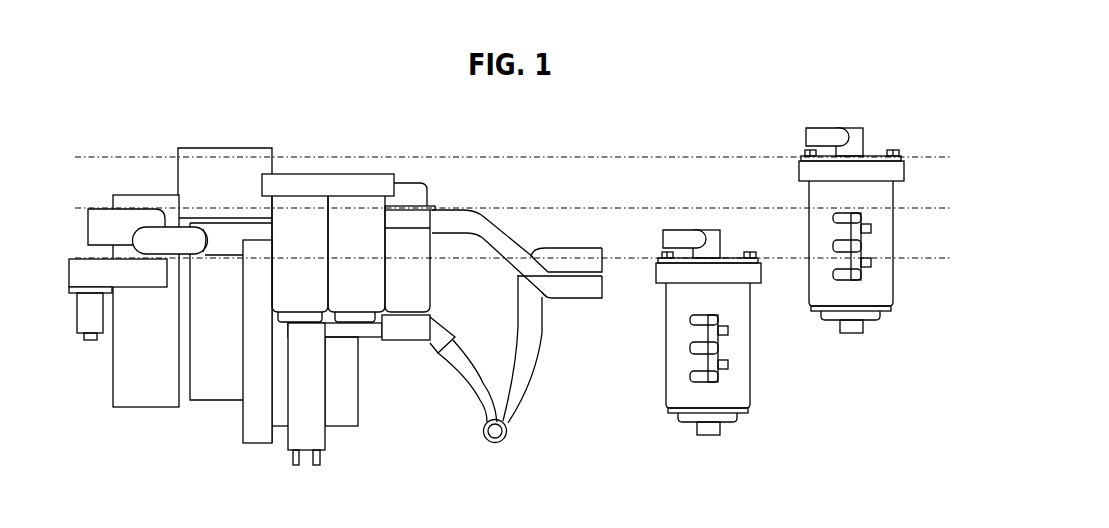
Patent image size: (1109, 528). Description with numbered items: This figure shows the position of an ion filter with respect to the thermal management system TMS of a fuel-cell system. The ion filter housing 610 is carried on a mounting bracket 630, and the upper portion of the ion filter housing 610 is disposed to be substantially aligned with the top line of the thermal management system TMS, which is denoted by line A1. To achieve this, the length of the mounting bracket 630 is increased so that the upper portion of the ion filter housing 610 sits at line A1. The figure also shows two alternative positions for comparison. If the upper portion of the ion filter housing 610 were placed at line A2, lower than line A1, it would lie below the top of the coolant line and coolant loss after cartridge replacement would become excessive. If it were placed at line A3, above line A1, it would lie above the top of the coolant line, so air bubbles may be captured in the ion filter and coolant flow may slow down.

The ion filter housing 610 is at (343, 210).
The mounting bracket 630 is at (253, 423).
The thermal management system TMS is at (345, 412).
The line A1 is at (530, 210).
The line A2 is at (530, 260).
The line A3 is at (530, 158).